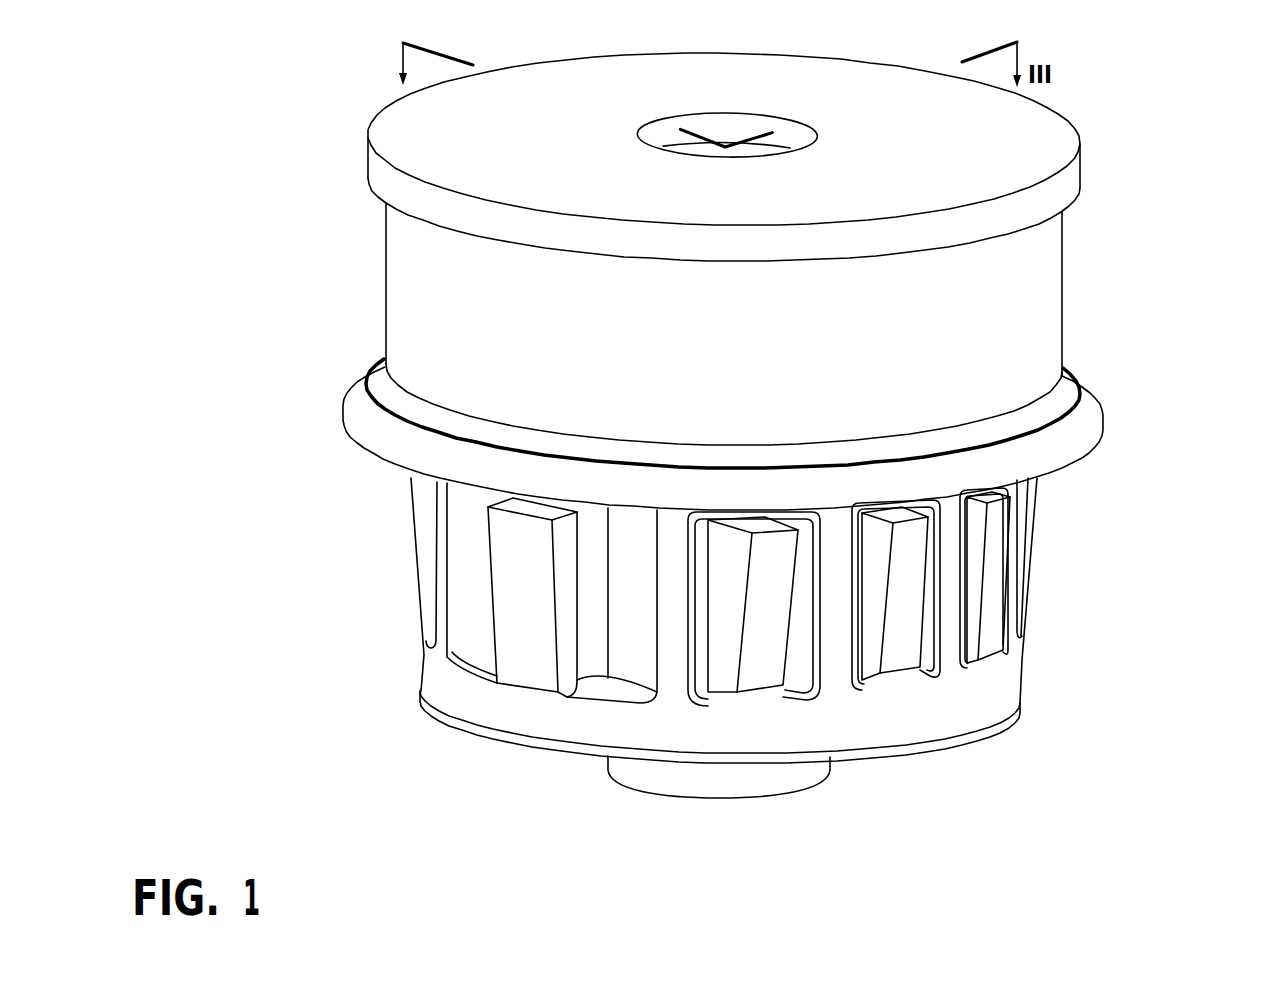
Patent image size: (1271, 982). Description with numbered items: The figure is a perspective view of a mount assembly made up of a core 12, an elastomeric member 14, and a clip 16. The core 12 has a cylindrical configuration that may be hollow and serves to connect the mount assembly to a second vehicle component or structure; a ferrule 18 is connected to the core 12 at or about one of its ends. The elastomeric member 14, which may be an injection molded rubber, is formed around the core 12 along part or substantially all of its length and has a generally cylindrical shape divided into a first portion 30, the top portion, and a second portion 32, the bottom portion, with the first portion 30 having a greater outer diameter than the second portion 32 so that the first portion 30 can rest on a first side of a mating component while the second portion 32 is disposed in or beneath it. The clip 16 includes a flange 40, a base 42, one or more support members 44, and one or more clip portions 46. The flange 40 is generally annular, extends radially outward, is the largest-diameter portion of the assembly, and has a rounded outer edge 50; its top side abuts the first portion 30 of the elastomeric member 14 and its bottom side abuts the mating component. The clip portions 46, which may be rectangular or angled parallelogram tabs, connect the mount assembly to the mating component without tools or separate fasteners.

The core 12 is at (783, 806).
The elastomeric member 14 is at (1140, 149).
The clip 16 is at (1058, 546).
The ferrule 18 is at (882, 117).
The first portion 30 is at (1002, 318).
The second portion 32 is at (933, 748).
The flange 40 is at (357, 413).
The base 42 is at (443, 687).
The support members 44 is at (675, 705).
The clip portions 46 is at (533, 660).
The outer edge 50 is at (1118, 417).